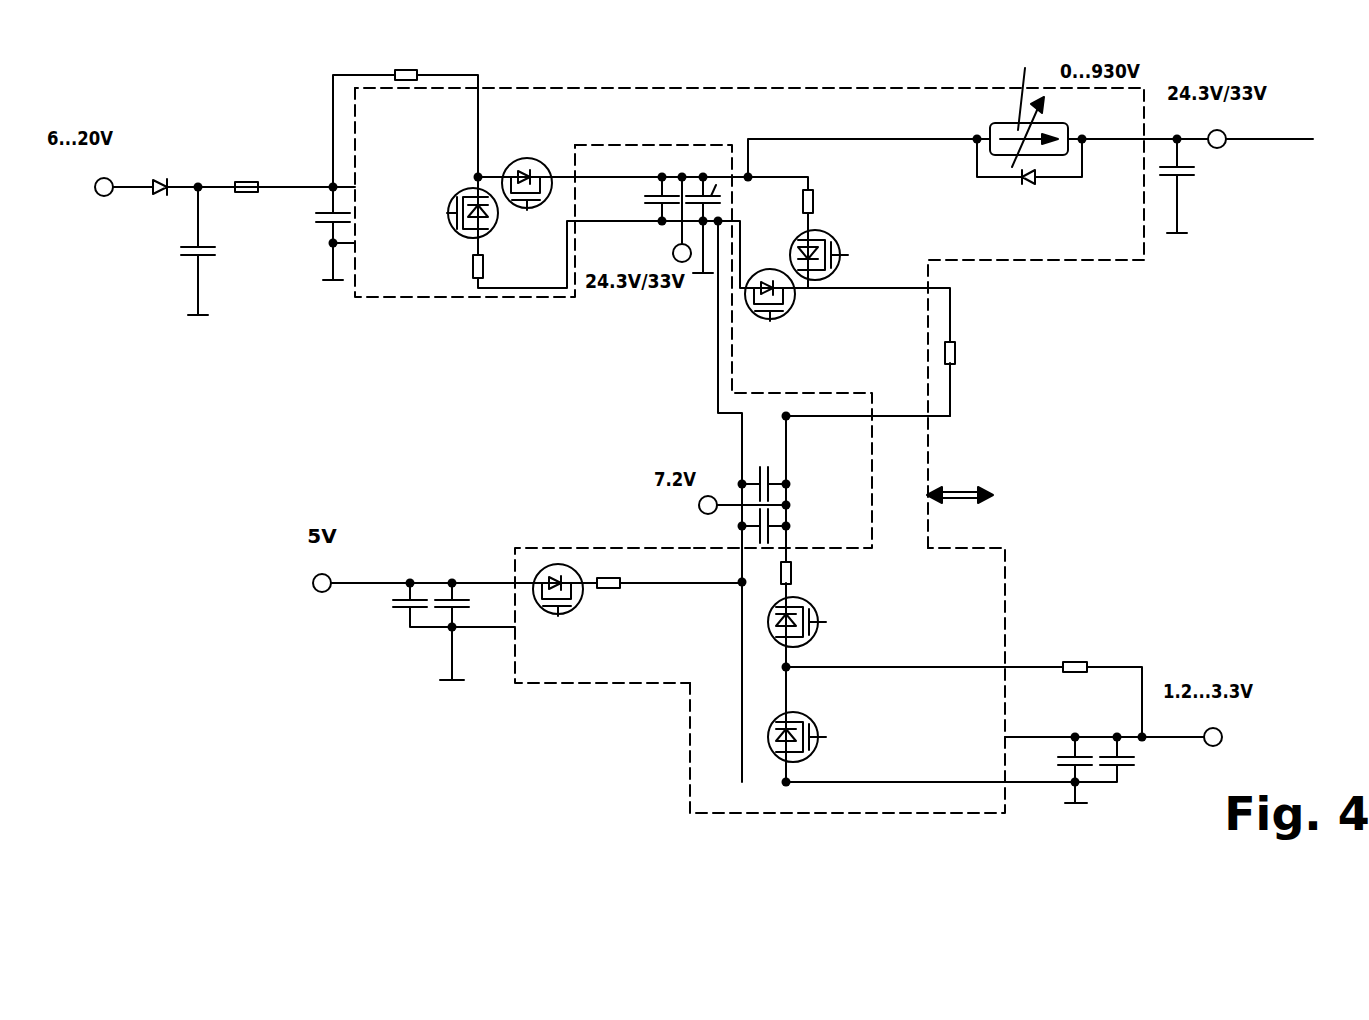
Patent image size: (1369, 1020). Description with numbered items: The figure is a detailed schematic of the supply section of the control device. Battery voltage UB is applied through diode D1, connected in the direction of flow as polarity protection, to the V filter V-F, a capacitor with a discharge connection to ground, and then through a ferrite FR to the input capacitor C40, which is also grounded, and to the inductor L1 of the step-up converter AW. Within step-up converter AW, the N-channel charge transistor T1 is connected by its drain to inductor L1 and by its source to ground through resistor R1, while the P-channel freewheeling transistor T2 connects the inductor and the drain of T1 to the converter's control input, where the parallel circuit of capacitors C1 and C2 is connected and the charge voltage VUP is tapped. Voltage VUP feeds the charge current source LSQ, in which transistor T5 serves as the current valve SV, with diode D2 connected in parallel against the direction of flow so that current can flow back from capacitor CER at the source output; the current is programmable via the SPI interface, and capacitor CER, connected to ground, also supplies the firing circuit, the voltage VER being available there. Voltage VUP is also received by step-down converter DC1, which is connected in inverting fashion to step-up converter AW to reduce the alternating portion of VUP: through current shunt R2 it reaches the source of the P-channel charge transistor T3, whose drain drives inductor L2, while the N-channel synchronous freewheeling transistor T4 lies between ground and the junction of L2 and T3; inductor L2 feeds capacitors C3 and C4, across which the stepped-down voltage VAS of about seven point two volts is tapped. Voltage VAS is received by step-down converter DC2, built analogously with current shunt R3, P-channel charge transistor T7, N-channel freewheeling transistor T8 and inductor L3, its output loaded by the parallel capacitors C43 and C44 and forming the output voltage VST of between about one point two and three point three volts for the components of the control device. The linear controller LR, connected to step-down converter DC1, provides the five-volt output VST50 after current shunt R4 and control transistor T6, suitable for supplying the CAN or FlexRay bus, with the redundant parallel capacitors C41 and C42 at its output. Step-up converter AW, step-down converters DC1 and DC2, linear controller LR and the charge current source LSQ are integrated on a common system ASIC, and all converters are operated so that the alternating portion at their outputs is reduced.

The battery voltage UB is at (82, 189).
The diode D1 is at (160, 174).
The filter resistor FR is at (245, 173).
The V filter V-F is at (231, 249).
The input capacitor C40 is at (312, 219).
The inductor L1 is at (407, 63).
The step-up converter AW is at (417, 278).
The N-channel charge transistor T1 is at (455, 213).
The freewheeling P-channel transistor T2 is at (527, 200).
The resistor R1 is at (463, 266).
The capacitor C1 is at (647, 200).
The capacitor C2 is at (706, 174).
The charge voltage VUP is at (658, 254).
The step-down converter DC1 is at (747, 365).
The current shunt R2 is at (792, 203).
The P-channel charge transistor T3 is at (834, 255).
The synchronous freewheeling N-channel transistor T4 is at (770, 310).
The inductor L2 is at (965, 354).
The capacitor C3 is at (763, 474).
The capacitor C4 is at (790, 521).
The stepped-down voltage VAS is at (684, 506).
The SPI interface SPI is at (984, 495).
The charge current source LSQ is at (1083, 242).
The transistor T5 is at (1026, 132).
The current valve SV is at (1023, 90).
The diode D2 is at (1030, 192).
The capacitor CER is at (1202, 171).
The supply voltage output VER is at (1217, 127).
The 5V control voltage input VST50 is at (322, 571).
The capacitor C41 is at (389, 608).
The capacitor C42 is at (473, 608).
The linear controller LR is at (562, 665).
The control transistor T6 is at (558, 607).
The current shunt R4 is at (607, 598).
The step-down converter DC2 is at (702, 747).
The current shunt R3 is at (802, 574).
The P-channel charge transistor T7 is at (812, 622).
The N-channel freewheeling transistor T8 is at (812, 737).
The inductor L3 is at (1076, 654).
The capacitor C43 is at (1054, 761).
The capacitor C44 is at (1139, 761).
The output voltage VST is at (1212, 726).